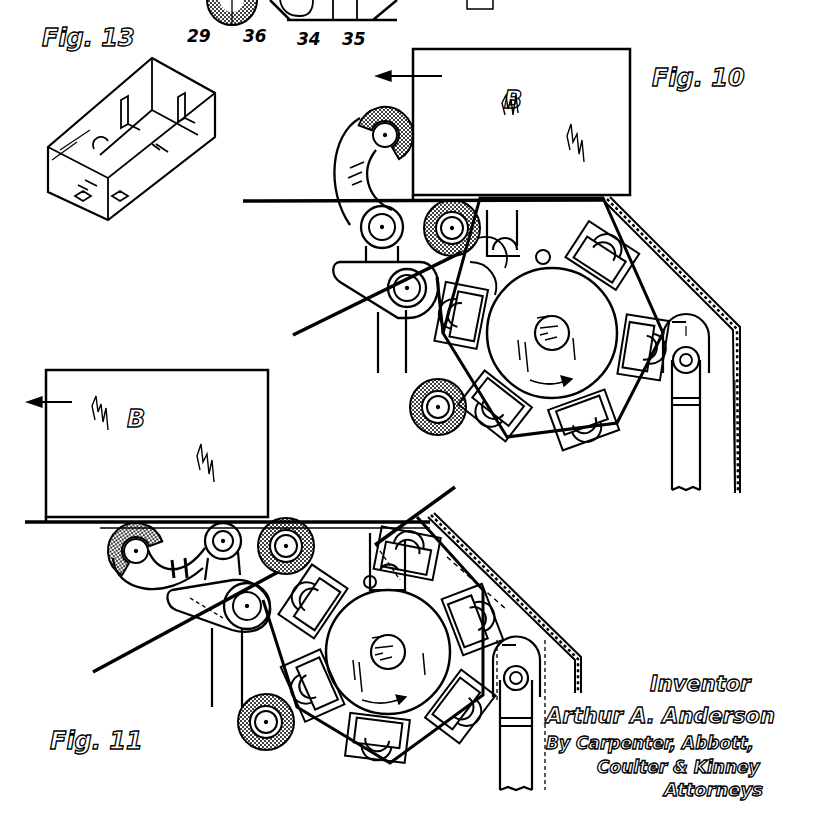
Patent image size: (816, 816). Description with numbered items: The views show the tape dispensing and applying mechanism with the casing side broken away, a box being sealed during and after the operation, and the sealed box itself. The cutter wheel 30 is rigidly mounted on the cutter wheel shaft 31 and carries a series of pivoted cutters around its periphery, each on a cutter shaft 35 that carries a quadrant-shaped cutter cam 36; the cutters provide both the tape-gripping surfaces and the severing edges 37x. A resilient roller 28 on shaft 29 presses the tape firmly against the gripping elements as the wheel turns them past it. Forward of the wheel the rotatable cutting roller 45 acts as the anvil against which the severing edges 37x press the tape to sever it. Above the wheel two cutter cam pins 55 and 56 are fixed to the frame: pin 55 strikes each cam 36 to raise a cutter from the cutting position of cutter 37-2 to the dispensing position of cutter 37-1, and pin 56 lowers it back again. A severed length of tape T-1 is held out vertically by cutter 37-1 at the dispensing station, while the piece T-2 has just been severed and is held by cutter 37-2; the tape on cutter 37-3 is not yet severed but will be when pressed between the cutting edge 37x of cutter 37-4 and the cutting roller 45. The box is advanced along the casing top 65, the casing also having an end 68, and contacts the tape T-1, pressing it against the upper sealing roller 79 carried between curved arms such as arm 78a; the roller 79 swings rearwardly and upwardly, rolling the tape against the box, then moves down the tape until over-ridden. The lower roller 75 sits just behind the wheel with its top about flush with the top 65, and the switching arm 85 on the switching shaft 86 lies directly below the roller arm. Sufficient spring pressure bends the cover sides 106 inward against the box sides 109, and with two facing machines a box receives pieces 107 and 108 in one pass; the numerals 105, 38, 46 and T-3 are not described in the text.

In FIG. 13, the box side wall 105 is at (160, 168).
In FIG. 13, the sides of box cover 106 is at (86, 120).
In FIG. 13, the piece of tape 107 is at (130, 200).
In FIG. 13, the piece of tape 108 is at (125, 104).
In FIG. 13, the sides of box 109 is at (103, 146).
In FIG. 10, the roller 28 is at (410, 407).
In FIG. 11, the roller 28 is at (246, 738).
In FIG. 10, the shaft 29 is at (438, 412).
In FIG. 10, the cutter wheel 30 is at (623, 404).
In FIG. 11, the cutter wheel 30 is at (320, 735).
In FIG. 10, the cutter wheel shaft 31 is at (536, 333).
In FIG. 11, the cutter wheel shaft 31 is at (372, 649).
In FIG. 11, the cutter shaft 35 is at (370, 760).
In FIG. 10, the cutter cam 36 is at (522, 450).
In FIG. 11, the cutter cam 36 is at (455, 596).
In FIG. 10, the cutter 37-1 is at (507, 257).
In FIG. 11, the cutter 37-1 is at (340, 600).
In FIG. 10, the cutter 37-2 is at (600, 282).
In FIG. 11, the cutter 37-2 is at (442, 545).
In FIG. 10, the cutter 37-3 is at (634, 340).
In FIG. 11, the cutter 37-3 is at (458, 622).
In FIG. 11, the cutter 37-4 is at (452, 690).
In FIG. 10, the severing edges 37x is at (432, 380).
In FIG. 11, the severing edges 37x is at (282, 672).
In FIG. 11, the pocket member 38 is at (395, 762).
In FIG. 10, the cutting roller 45 is at (685, 322).
In FIG. 11, the cutting roller 45 is at (536, 648).
In FIG. 10, the link bar 46 is at (682, 450).
In FIG. 11, the link bar 46 is at (500, 778).
In FIG. 10, the cutter cam pin 55 is at (553, 238).
In FIG. 11, the cutter cam pin 55 is at (362, 578).
In FIG. 10, the cutter cam pin 56 is at (480, 255).
In FIG. 11, the cutter cam pin 56 is at (312, 574).
In FIG. 10, the top 65 is at (255, 205).
In FIG. 11, the top 65 is at (40, 526).
In FIG. 10, the end 68 is at (740, 392).
In FIG. 11, the end 68 is at (580, 666).
In FIG. 10, the lower roller 75 is at (452, 203).
In FIG. 11, the lower roller 75 is at (292, 511).
In FIG. 10, the arm 78a is at (352, 165).
In FIG. 11, the arm 78a is at (158, 574).
In FIG. 10, the upper sealing roller 79 is at (378, 110).
In FIG. 11, the upper sealing roller 79 is at (140, 522).
In FIG. 10, the switching arm 85 is at (340, 272).
In FIG. 11, the switching arm 85 is at (172, 606).
In FIG. 10, the switching shaft 86 is at (398, 296).
In FIG. 11, the switching shaft 86 is at (233, 626).
In FIG. 10, the severed length of tape T-1 is at (416, 173).
In FIG. 11, the severed length of tape T-1 is at (48, 498).
In FIG. 10, the piece of tape T-2 is at (640, 266).
In FIG. 11, the piece of tape T-2 is at (482, 584).
In FIG. 11, the third timing position T-3 is at (510, 626).